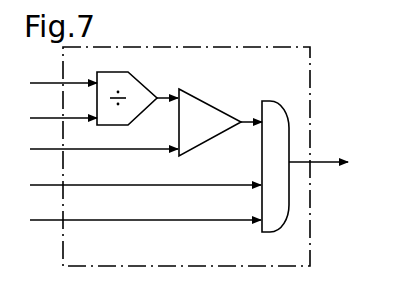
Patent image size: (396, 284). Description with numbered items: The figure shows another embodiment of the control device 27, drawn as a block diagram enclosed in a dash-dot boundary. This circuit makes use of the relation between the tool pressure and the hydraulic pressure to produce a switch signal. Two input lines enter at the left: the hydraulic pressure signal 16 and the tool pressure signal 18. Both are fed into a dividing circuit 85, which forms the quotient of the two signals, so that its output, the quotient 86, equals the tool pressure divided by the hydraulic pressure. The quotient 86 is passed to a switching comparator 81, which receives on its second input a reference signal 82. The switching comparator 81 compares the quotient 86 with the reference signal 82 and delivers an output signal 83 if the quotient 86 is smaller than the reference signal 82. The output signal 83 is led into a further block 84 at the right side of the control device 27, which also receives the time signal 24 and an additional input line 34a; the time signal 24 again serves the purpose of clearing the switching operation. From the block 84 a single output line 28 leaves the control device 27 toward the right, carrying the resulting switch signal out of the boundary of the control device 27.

The hydraulic pressure signal 16 is at (45, 80).
The tool pressure signal 18 is at (45, 115).
The reference signal 82 is at (45, 146).
The time signal 24 is at (48, 182).
The input signal line 34a is at (48, 223).
The dividing circuit 85 is at (138, 108).
The quotient 86 is at (161, 94).
The switching comparator 81 is at (210, 122).
The output signal 83 is at (242, 117).
The logic unit 84 is at (275, 166).
The output signal line 28 is at (325, 158).
The control device 27 is at (313, 233).